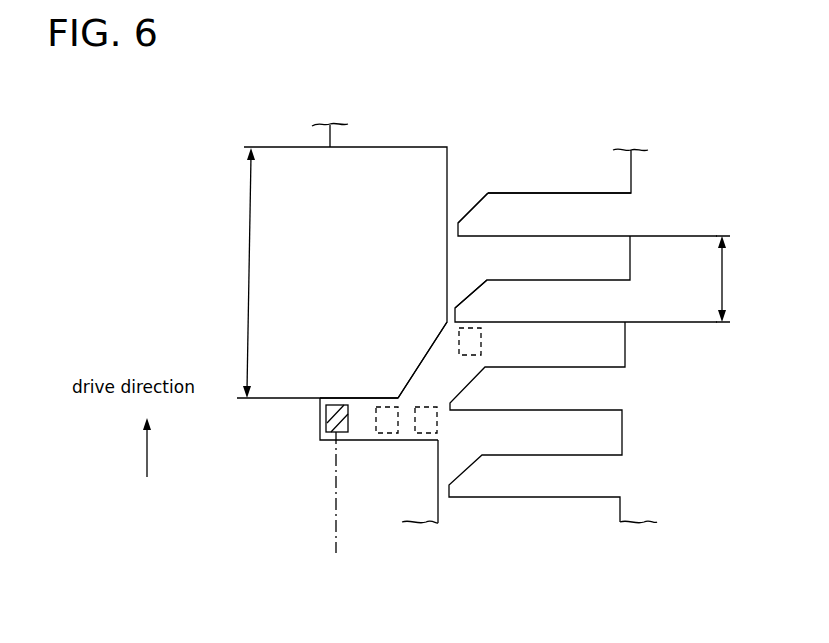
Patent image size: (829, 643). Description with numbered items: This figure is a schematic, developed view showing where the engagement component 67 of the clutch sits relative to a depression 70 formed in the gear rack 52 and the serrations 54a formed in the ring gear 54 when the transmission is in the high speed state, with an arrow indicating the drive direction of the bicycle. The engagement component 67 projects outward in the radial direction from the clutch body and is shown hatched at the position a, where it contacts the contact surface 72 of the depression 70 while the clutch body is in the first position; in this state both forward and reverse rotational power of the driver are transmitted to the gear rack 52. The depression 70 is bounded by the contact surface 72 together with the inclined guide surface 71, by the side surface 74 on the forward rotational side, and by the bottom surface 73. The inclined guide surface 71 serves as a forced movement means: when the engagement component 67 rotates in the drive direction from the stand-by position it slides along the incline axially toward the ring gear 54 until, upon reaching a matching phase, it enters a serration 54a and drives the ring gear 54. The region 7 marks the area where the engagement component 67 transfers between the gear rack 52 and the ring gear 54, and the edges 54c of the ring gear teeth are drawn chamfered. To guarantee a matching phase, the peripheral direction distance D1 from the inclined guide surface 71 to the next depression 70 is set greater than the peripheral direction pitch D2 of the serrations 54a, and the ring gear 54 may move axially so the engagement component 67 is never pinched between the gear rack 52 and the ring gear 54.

The gear rack 52 is at (376, 148).
The ring gear 54 is at (631, 175).
The serration 54a is at (568, 193).
The chamfered edge 54c is at (477, 283).
The engagement point 7 is at (418, 383).
The depression 70 is at (456, 422).
The inclined guide surface 71 is at (422, 360).
The contact surface 72 is at (363, 398).
The bottom surface 73 is at (320, 414).
The engagement component 67 is at (326, 432).
The side surface 74 is at (386, 440).
The position a is at (334, 511).
The peripheral direction distance D1 is at (272, 273).
The peripheral direction pitch D2 is at (746, 279).